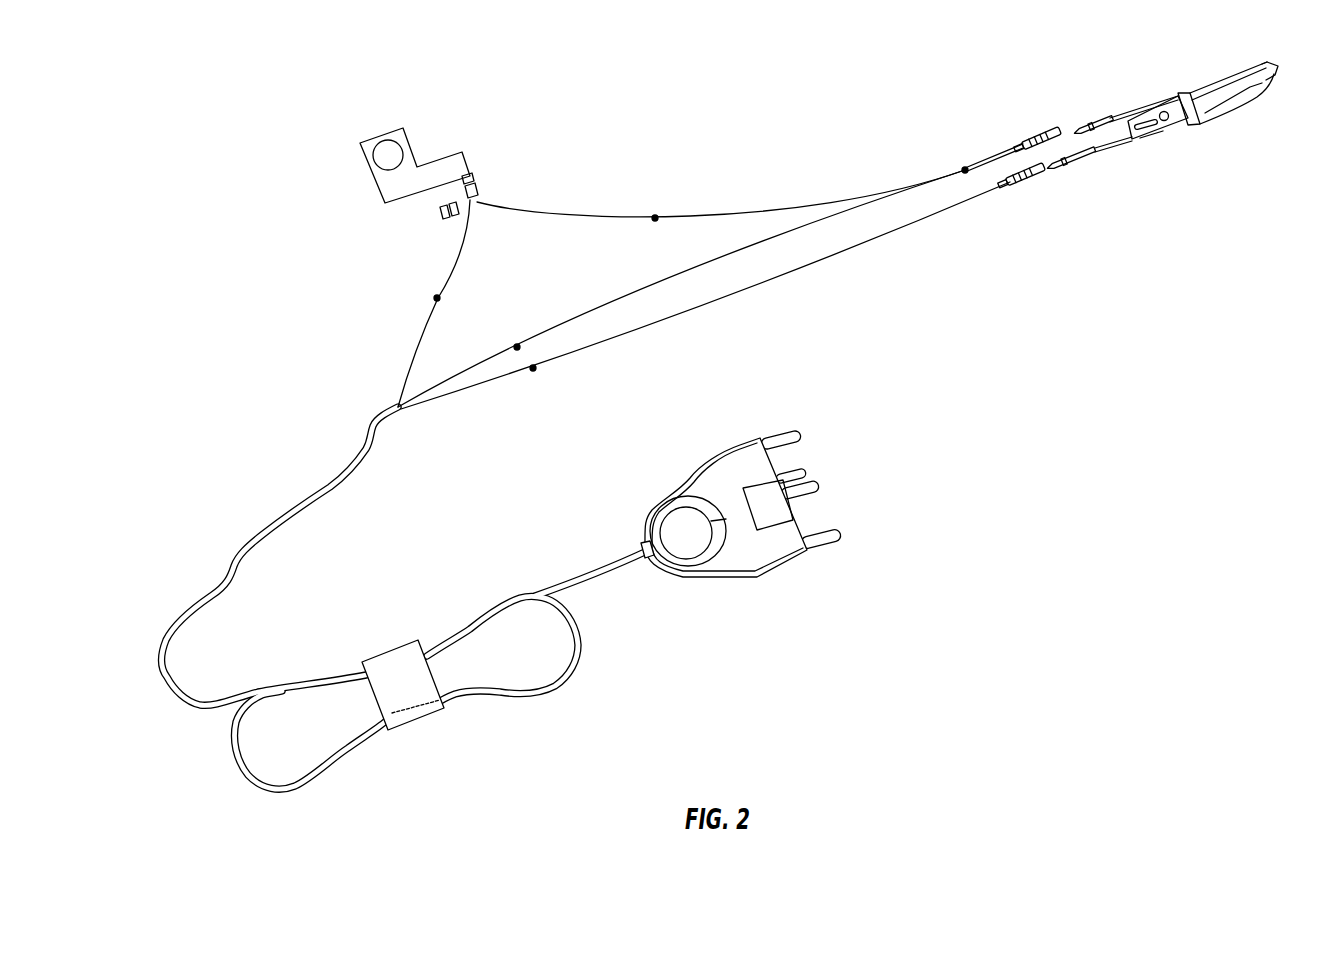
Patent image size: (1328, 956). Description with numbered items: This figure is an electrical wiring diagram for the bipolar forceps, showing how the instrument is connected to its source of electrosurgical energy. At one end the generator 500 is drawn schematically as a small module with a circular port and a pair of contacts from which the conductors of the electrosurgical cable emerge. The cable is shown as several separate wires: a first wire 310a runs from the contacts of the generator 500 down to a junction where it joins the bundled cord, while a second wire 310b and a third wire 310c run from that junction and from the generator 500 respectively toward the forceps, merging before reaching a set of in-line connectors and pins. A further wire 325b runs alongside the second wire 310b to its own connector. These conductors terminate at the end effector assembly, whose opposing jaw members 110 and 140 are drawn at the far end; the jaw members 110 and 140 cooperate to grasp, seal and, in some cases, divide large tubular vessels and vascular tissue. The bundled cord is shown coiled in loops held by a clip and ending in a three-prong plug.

The generator 500 is at (363, 158).
The jaw member 110 is at (1253, 68).
The jaw member 140 is at (1260, 93).
The cable 310a is at (437, 298).
The cable 310b is at (517, 347).
The cable 310c is at (655, 218).
The cable 325b is at (533, 368).